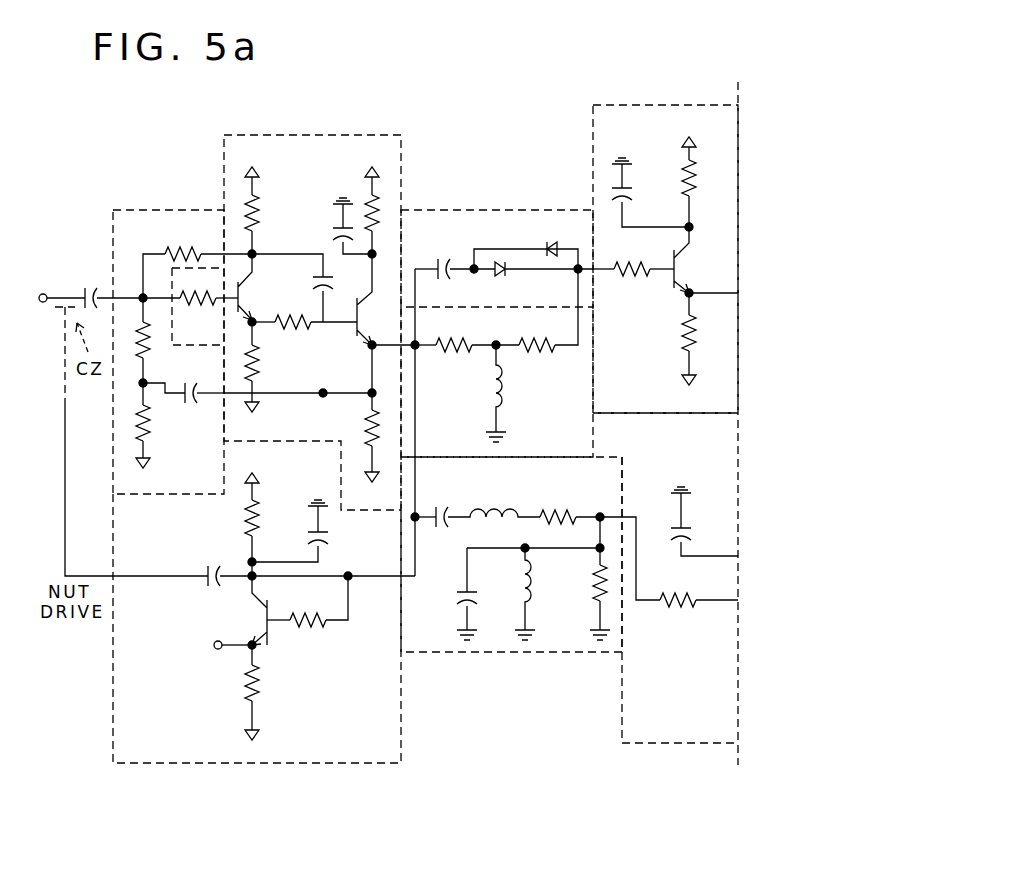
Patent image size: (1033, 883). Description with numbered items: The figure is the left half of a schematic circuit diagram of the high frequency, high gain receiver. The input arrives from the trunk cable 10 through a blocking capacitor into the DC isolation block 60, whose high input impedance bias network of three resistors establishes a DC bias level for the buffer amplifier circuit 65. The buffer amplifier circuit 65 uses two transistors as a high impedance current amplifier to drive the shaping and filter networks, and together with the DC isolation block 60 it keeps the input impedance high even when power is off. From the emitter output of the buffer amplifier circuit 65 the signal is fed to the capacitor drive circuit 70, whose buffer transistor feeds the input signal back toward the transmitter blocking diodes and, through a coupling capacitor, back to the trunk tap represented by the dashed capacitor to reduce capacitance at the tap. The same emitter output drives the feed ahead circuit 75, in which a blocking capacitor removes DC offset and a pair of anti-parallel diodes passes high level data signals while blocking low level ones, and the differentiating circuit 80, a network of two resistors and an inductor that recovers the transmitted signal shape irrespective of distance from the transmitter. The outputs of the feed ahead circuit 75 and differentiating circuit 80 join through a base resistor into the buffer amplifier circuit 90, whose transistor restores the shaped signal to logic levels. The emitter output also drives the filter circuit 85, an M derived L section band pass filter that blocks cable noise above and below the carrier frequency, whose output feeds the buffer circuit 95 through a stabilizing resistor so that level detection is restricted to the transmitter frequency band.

The trunk cable 10 is at (46, 294).
The DC isolation block 60 is at (172, 208).
The buffer amplifier circuit 65 is at (312, 133).
The capacitor drive circuit 70 is at (404, 728).
The feed ahead circuit 75 is at (489, 209).
The differentiating circuit 80 is at (462, 437).
The filter circuit 85 is at (549, 656).
The buffer amplifier circuit 90 is at (659, 103).
The buffer circuit 95 is at (673, 746).